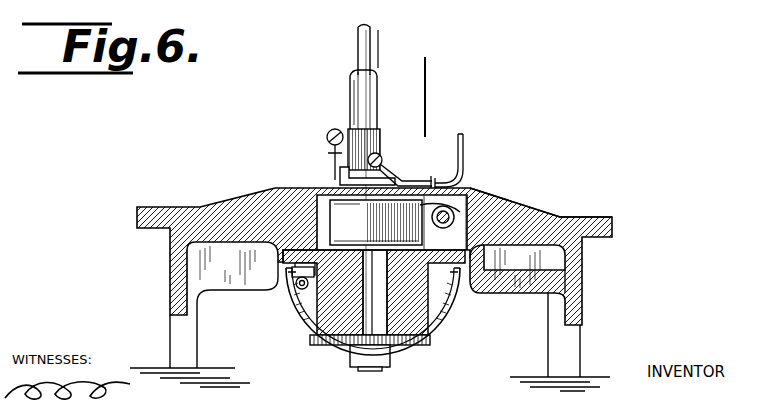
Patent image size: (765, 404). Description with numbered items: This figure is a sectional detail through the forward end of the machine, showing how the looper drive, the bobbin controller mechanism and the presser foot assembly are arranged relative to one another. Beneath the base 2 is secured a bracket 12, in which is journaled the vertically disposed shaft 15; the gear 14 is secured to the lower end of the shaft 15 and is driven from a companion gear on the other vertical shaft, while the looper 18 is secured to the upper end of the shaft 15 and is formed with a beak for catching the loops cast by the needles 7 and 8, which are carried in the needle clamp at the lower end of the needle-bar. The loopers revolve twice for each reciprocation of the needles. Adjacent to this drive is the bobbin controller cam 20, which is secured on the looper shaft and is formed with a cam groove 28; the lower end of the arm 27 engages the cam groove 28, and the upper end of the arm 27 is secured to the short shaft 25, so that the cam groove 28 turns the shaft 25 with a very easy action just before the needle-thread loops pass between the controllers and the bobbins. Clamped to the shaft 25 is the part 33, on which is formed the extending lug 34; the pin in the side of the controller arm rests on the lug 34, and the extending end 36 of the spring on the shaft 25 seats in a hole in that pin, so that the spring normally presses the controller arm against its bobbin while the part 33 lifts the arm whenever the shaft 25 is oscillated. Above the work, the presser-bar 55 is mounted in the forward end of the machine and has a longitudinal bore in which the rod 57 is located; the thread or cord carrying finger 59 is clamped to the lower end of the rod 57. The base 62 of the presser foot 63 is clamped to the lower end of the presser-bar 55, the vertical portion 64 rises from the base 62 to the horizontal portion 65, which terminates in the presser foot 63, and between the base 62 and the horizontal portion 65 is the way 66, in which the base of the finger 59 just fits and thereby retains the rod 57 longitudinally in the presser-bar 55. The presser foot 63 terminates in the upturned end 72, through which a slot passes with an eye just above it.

The base 2 is at (222, 206).
The needle 7 is at (428, 80).
The needle 8 is at (370, 358).
The bracket 12 is at (325, 318).
The gear 14 is at (436, 350).
The vertically disposed shaft 15 is at (342, 348).
The looper 18 is at (376, 222).
The bobbin controller cam 20 is at (453, 322).
The short shaft 25 is at (500, 208).
The arm 27 is at (294, 290).
The cam groove 28 is at (434, 358).
The part 33 is at (445, 222).
The lug 34 is at (466, 182).
The extending end of spring 36 is at (456, 206).
The presser-bar 55 is at (351, 84).
The rod 57 is at (371, 46).
The thread or cord carrying finger 59 is at (410, 182).
The base of presser foot 62 is at (356, 130).
The presser foot 63 is at (434, 184).
The vertical portion 64 is at (327, 139).
The horizontal portion 65 is at (340, 179).
The way 66 is at (380, 152).
The upturned end 72 is at (465, 148).